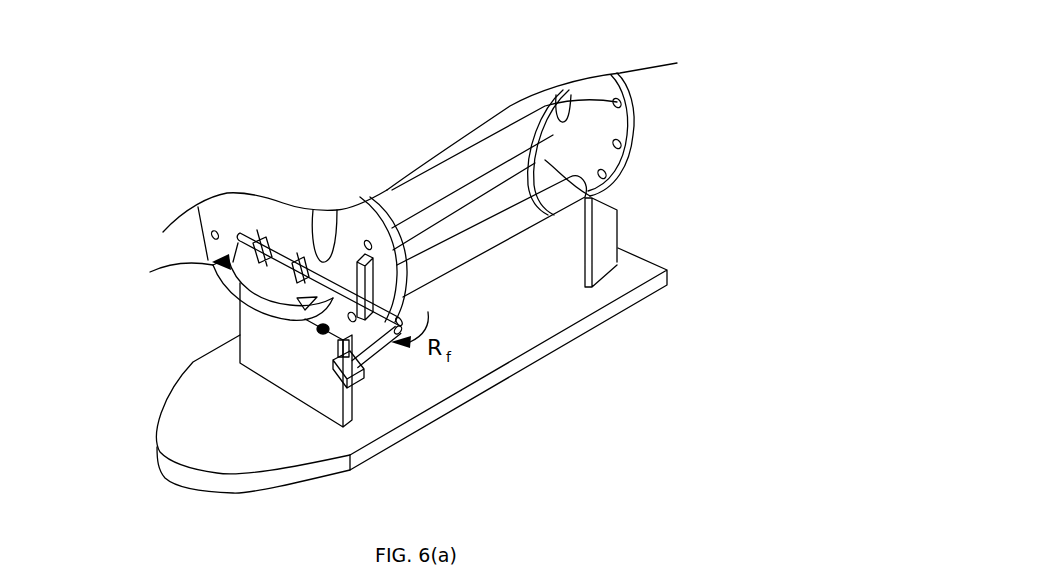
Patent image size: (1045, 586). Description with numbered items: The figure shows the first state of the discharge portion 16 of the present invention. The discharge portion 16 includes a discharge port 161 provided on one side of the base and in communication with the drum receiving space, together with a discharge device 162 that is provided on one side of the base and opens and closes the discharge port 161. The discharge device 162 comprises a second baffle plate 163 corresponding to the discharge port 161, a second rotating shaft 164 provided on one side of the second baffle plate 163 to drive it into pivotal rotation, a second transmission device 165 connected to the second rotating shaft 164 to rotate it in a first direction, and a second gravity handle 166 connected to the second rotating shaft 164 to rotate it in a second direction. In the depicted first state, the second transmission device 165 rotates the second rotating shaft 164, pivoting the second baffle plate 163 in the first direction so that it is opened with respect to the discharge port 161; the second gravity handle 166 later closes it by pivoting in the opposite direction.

The discharge portion 16 is at (100, 256).
The discharge port 161 is at (258, 318).
The discharge device 162 is at (213, 262).
The second baffle plate 163 is at (262, 245).
The second rotating shaft 164 is at (298, 258).
The second transmission device 165 is at (351, 260).
The second gravity handle 166 is at (362, 372).